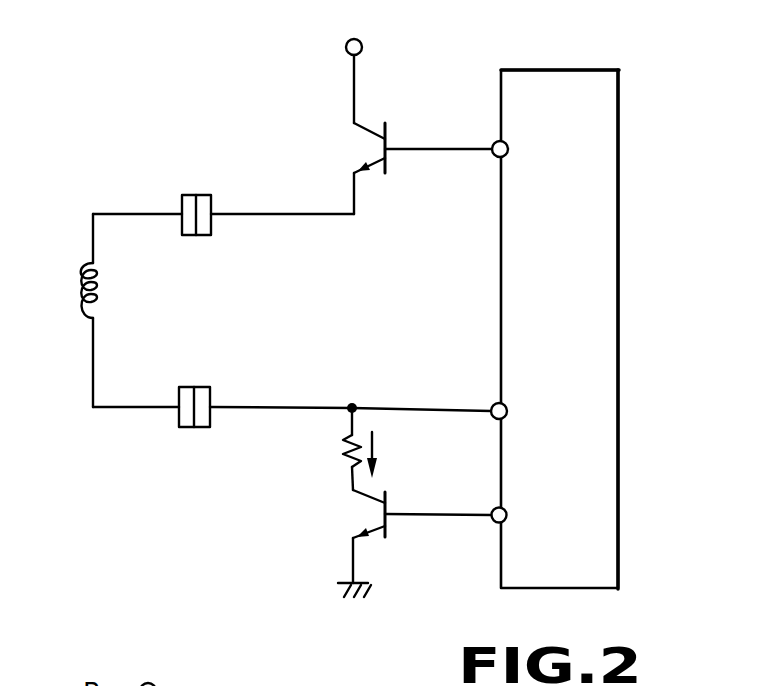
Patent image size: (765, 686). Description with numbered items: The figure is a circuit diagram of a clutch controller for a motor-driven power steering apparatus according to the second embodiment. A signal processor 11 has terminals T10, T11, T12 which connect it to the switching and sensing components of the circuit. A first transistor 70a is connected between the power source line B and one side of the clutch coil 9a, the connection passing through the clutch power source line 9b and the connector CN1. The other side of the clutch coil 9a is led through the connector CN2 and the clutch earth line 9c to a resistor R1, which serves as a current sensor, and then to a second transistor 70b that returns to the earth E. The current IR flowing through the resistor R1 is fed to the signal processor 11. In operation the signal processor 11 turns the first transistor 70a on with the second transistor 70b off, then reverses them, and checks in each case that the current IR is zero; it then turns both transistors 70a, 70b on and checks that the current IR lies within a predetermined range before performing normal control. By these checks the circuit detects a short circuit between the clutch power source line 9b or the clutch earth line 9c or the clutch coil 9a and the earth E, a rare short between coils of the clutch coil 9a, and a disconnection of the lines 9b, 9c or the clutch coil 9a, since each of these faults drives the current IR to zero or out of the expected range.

The signal processor 11 is at (587, 70).
The clutch coil 9a is at (78, 290).
The clutch power source line 9b is at (140, 214).
The clutch earth line 9c is at (125, 408).
The connector CN1 is at (213, 235).
The connector CN2 is at (205, 387).
The first transistor 70a is at (362, 148).
The second transistor 70b is at (370, 517).
The resistor R1 is at (340, 456).
The current IR is at (375, 447).
The terminal T10 is at (495, 158).
The terminal T11 is at (492, 404).
The terminal T12 is at (495, 523).
The power source line B is at (346, 48).
The earth E is at (340, 600).